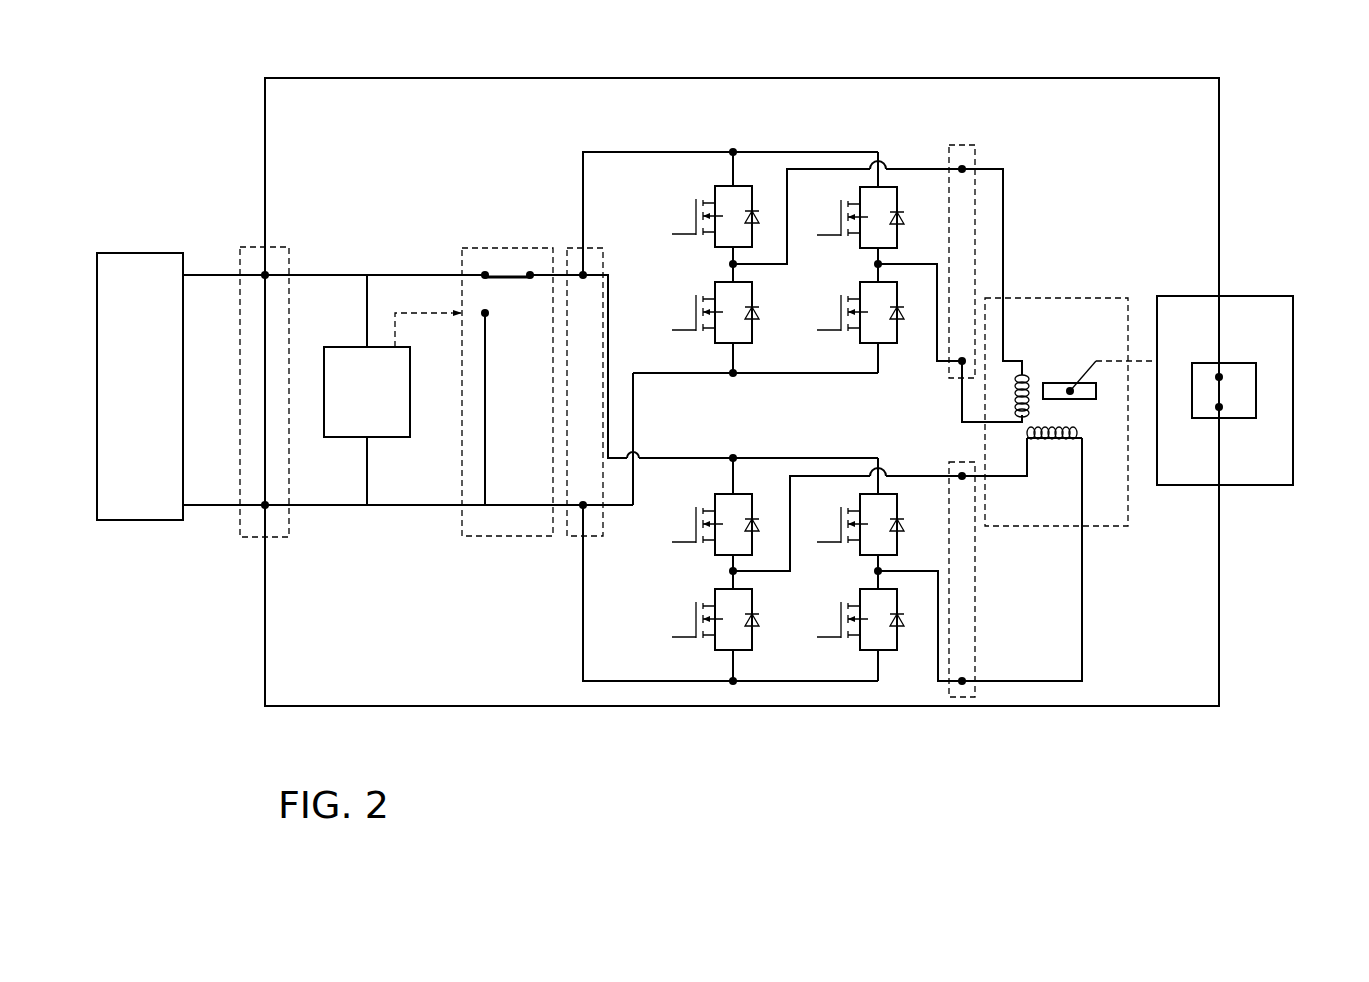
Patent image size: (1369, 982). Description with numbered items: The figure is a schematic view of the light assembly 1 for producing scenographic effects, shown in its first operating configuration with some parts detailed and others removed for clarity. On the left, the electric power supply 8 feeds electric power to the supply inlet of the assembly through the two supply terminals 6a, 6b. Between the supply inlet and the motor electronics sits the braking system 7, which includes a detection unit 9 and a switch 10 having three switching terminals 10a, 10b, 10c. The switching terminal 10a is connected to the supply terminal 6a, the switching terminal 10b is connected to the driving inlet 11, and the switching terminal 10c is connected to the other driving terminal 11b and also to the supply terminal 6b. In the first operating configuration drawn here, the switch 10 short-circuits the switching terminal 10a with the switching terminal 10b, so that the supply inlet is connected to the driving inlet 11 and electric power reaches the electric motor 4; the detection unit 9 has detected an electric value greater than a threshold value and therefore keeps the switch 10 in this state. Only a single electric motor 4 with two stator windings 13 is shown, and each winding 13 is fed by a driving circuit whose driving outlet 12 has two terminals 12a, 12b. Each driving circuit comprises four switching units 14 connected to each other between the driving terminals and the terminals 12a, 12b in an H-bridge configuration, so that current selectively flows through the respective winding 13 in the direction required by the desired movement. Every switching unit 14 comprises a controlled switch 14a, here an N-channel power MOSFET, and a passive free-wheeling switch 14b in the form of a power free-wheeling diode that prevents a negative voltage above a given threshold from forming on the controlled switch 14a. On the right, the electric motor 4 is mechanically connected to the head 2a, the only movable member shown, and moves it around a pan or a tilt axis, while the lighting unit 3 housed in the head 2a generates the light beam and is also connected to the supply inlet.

The light assembly 1 is at (226, 713).
The head 2a is at (1284, 330).
The lighting unit 3 is at (1258, 405).
The electric motor 4 is at (1085, 295).
The supply terminal 6a is at (262, 268).
The supply terminal 6b is at (262, 510).
The braking system 7 is at (383, 546).
The electric power supply 8 is at (95, 400).
The detection unit 9 is at (348, 343).
The switch 10 is at (490, 539).
The switching terminal 10a is at (485, 270).
The switching terminal 10b is at (530, 270).
The switching terminal 10c is at (489, 316).
The driving inlet 11 is at (600, 525).
The driving terminal 11b is at (585, 270).
The driving outlet 12 is at (978, 148).
The terminal 12a is at (966, 168).
The terminal 12b is at (960, 368).
The stator winding 13 is at (1032, 372).
The switching unit 14 is at (716, 178).
The controlled switch 14a is at (688, 224).
The passive free-wheeling switch 14b is at (757, 198).